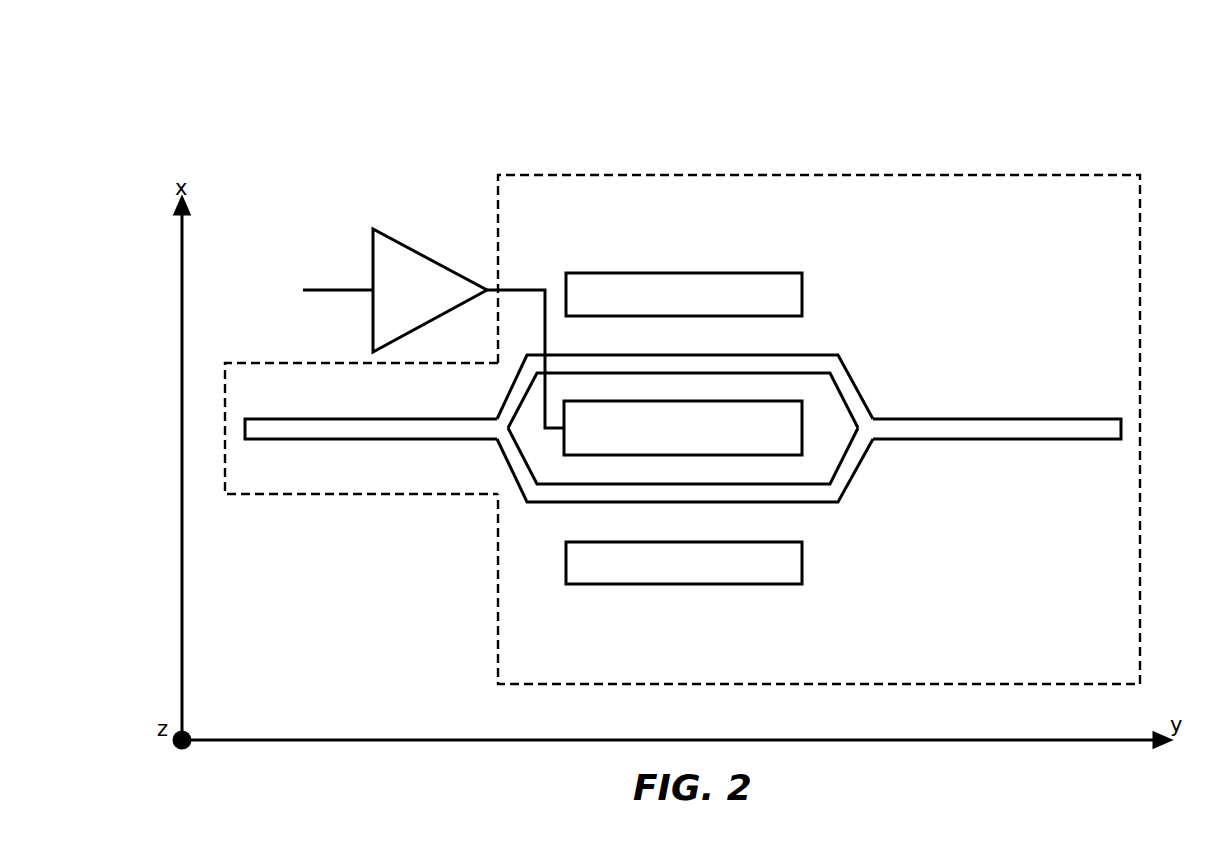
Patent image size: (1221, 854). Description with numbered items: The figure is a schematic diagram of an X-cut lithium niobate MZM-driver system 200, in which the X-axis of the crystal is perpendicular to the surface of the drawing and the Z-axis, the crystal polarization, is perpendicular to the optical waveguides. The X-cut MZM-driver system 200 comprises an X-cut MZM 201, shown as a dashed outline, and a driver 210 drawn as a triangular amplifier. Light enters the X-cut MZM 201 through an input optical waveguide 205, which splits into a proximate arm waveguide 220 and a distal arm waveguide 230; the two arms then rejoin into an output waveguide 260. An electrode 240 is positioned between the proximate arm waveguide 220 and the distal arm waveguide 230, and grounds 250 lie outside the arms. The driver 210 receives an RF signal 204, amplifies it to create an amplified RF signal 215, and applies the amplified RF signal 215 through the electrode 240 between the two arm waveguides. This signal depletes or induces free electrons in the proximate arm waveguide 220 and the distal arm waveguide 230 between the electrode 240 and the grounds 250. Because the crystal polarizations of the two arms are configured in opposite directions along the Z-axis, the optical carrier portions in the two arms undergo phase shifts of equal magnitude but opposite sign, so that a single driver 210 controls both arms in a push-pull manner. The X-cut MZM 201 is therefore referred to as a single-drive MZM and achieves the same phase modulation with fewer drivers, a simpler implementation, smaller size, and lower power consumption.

The X-cut MZM-driver system 200 is at (170, 116).
The X-cut MZM 201 is at (791, 175).
The RF signal 204 is at (328, 290).
The input optical waveguide 205 is at (340, 419).
The driver 210 is at (373, 323).
The amplified RF signal 215 is at (520, 284).
The proximate arm waveguide 220 is at (505, 394).
The distal arm waveguide 230 is at (505, 462).
The electrode 240 is at (683, 428).
The grounds 250 is at (684, 428).
The output waveguide 260 is at (986, 419).